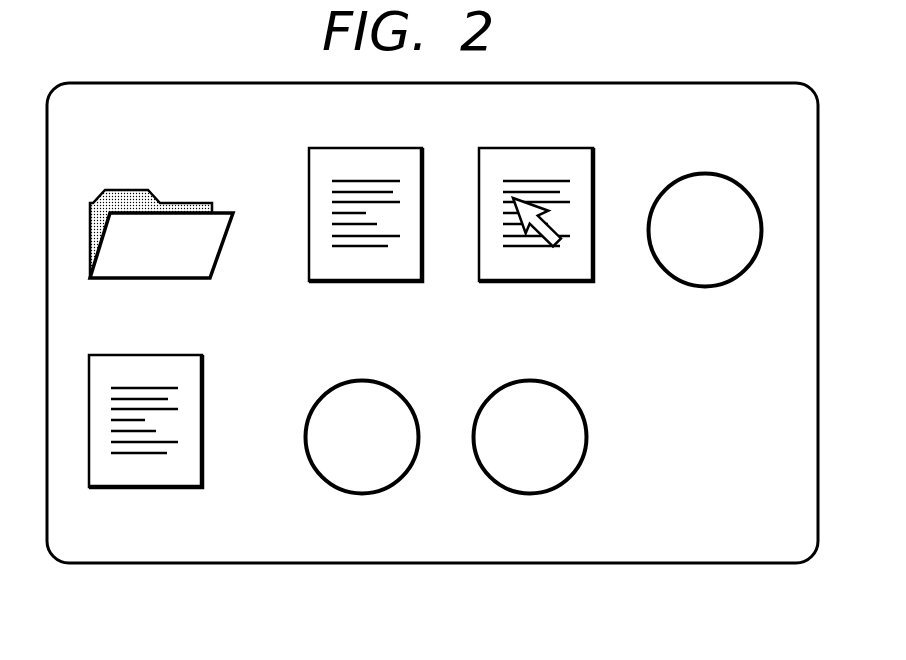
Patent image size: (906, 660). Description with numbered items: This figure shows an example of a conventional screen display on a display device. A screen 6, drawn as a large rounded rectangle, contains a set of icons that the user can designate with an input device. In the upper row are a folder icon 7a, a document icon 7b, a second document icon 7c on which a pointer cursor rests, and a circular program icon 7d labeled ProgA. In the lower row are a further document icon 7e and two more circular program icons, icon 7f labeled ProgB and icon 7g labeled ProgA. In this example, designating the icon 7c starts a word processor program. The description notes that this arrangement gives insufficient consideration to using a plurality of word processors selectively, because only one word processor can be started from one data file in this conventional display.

The screen 6 is at (762, 80).
The icon 7a is at (153, 242).
The icon 7b is at (398, 192).
The icon 7c is at (572, 193).
The icon 7d is at (752, 195).
The icon 7e is at (182, 400).
The icon 7f is at (407, 403).
The icon 7g is at (577, 403).